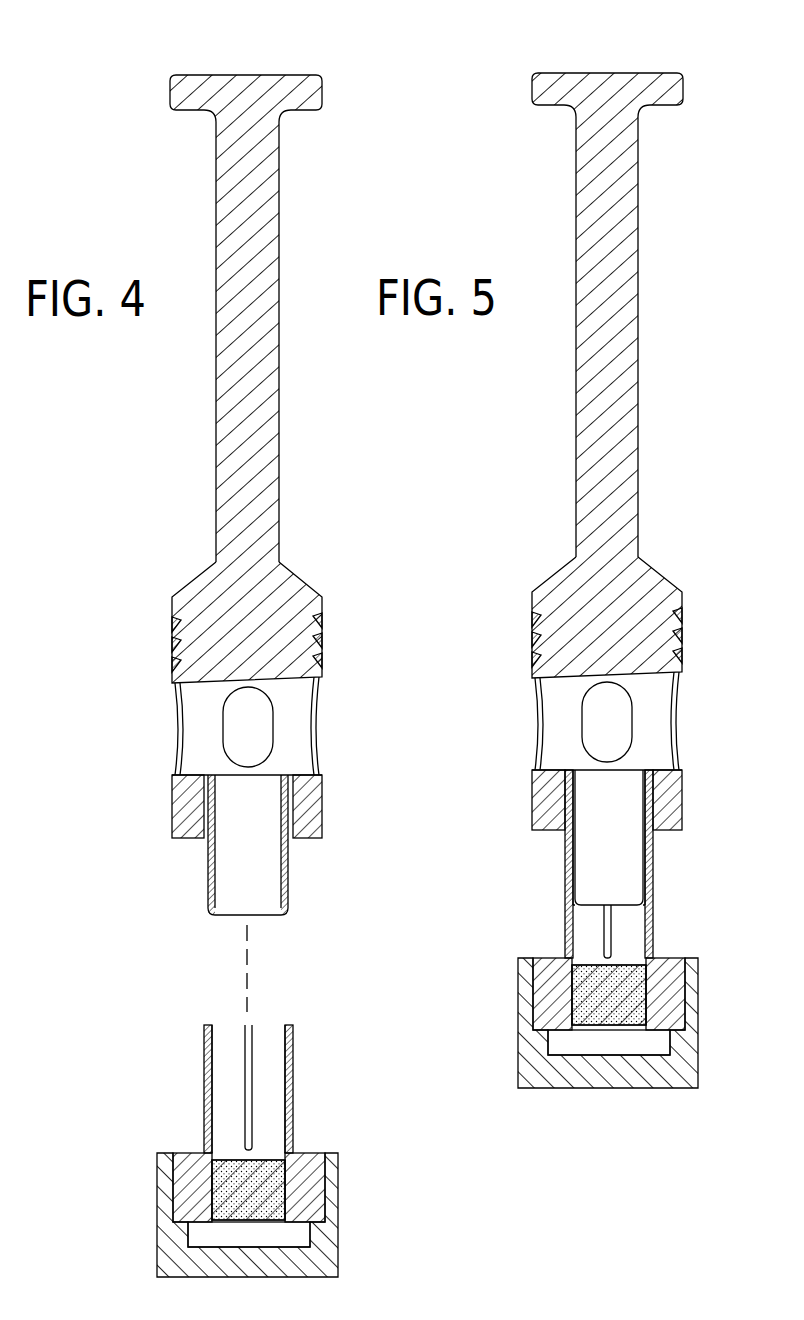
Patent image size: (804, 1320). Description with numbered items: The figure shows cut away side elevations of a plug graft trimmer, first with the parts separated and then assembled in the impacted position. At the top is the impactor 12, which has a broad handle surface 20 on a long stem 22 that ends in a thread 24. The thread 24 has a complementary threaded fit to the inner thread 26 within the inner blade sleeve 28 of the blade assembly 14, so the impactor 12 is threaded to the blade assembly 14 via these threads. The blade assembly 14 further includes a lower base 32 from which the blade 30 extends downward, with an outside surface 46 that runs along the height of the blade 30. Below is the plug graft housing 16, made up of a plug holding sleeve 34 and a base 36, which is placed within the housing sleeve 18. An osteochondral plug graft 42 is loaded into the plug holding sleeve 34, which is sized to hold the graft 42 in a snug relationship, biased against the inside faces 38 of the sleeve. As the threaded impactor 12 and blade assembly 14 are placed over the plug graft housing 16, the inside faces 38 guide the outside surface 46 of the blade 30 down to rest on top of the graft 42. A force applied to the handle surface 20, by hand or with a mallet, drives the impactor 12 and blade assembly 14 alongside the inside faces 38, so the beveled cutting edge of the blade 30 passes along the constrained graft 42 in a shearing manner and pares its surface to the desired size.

In FIG. 4, the impactor 12 is at (281, 493).
In FIG. 5, the impactor 12 is at (638, 475).
In FIG. 4, the blade assembly 14 is at (322, 660).
In FIG. 5, the blade assembly 14 is at (682, 655).
In FIG. 4, the plug graft housing 16 is at (306, 1153).
In FIG. 5, the plug graft housing 16 is at (668, 958).
In FIG. 4, the housing sleeve 18 is at (338, 1222).
In FIG. 5, the housing sleeve 18 is at (698, 1045).
In FIG. 4, the handle surface 20 is at (216, 75).
In FIG. 5, the handle surface 20 is at (613, 70).
In FIG. 4, the stem 22 is at (216, 462).
In FIG. 5, the stem 22 is at (576, 427).
In FIG. 4, the thread 24 is at (172, 628).
In FIG. 5, the thread 24 is at (532, 622).
In FIG. 4, the inner thread 26 is at (172, 648).
In FIG. 5, the inner thread 26 is at (682, 635).
In FIG. 4, the inner blade sleeve 28 is at (176, 736).
In FIG. 5, the inner blade sleeve 28 is at (535, 732).
In FIG. 4, the blade 30 is at (208, 880).
In FIG. 5, the blade 30 is at (565, 865).
In FIG. 4, the lower base 32 is at (322, 800).
In FIG. 5, the lower base 32 is at (682, 795).
In FIG. 4, the plug holding sleeve 34 is at (204, 1062).
In FIG. 5, the plug holding sleeve 34 is at (565, 930).
In FIG. 4, the base 36 is at (185, 1153).
In FIG. 5, the base 36 is at (546, 958).
In FIG. 4, the inside faces 38 is at (215, 1118).
In FIG. 5, the inside faces 38 is at (570, 932).
In FIG. 4, the osteochondral plug graft 42 is at (262, 1150).
In FIG. 5, the osteochondral plug graft 42 is at (653, 942).
In FIG. 4, the outside surface of blade 46 is at (288, 885).
In FIG. 5, the outside surface of blade 46 is at (653, 865).